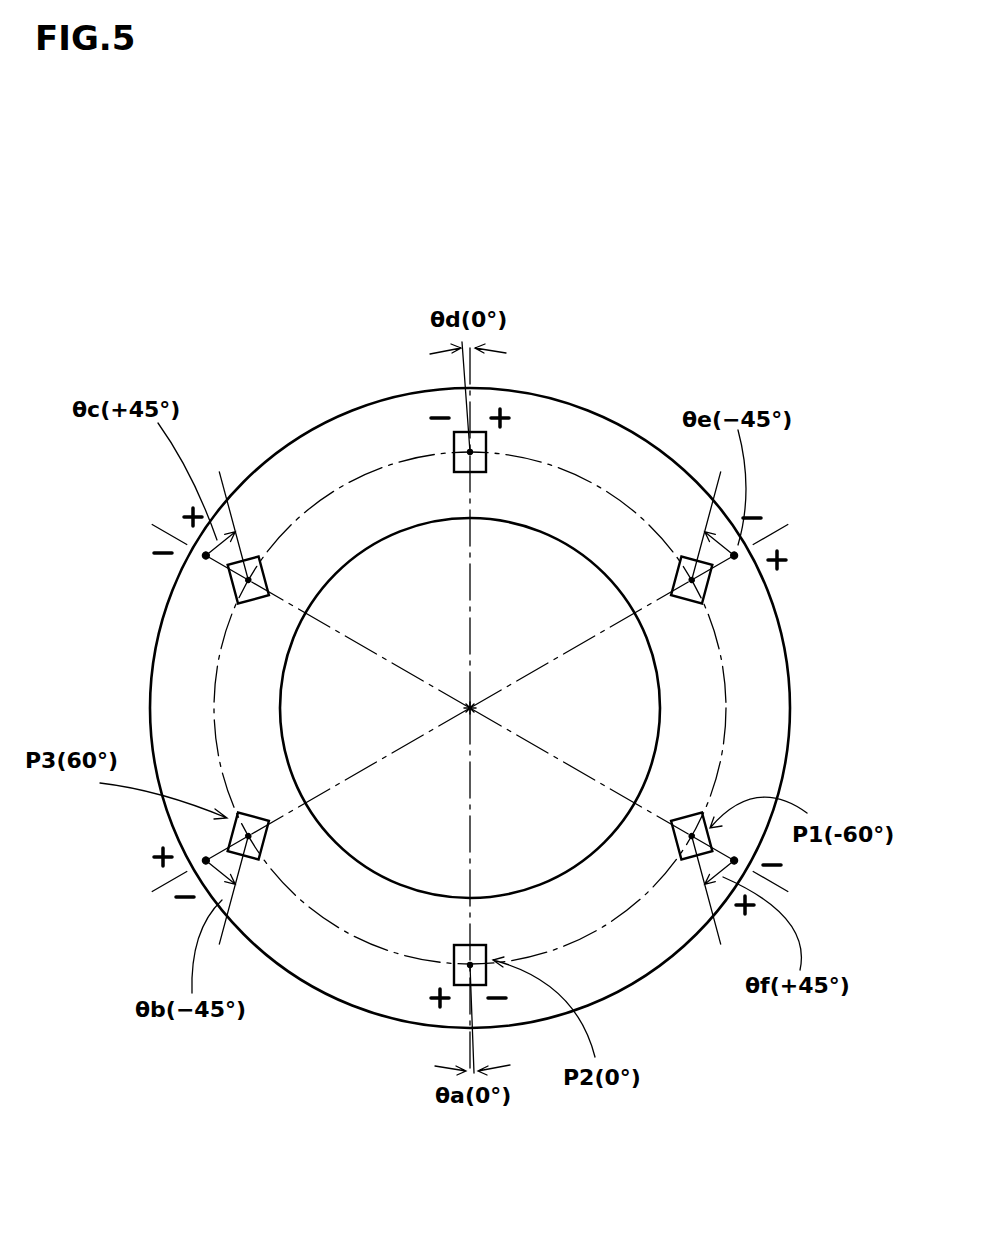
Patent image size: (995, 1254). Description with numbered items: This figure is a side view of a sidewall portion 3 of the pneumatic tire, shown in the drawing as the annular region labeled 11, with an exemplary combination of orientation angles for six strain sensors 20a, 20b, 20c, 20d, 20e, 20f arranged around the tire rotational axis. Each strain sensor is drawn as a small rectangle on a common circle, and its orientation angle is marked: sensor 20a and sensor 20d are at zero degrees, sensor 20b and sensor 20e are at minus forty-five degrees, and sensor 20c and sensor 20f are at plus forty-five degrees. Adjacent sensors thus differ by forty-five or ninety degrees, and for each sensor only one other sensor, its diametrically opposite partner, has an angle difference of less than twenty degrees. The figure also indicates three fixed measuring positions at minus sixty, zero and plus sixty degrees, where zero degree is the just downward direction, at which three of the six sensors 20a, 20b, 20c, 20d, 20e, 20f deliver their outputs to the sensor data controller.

The shaft 11 is at (372, 400).
The sidewall portion 3 is at (470, 651).
The strain sensor 20a is at (453, 960).
The strain sensor 20b is at (230, 845).
The strain sensor 20c is at (258, 557).
The strain sensor 20d is at (490, 457).
The strain sensor 20e is at (705, 590).
The strain sensor 20f is at (682, 860).